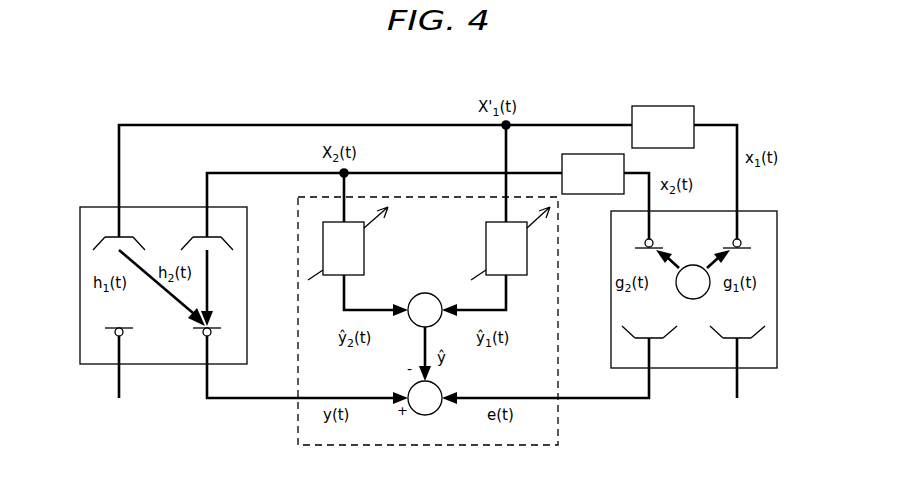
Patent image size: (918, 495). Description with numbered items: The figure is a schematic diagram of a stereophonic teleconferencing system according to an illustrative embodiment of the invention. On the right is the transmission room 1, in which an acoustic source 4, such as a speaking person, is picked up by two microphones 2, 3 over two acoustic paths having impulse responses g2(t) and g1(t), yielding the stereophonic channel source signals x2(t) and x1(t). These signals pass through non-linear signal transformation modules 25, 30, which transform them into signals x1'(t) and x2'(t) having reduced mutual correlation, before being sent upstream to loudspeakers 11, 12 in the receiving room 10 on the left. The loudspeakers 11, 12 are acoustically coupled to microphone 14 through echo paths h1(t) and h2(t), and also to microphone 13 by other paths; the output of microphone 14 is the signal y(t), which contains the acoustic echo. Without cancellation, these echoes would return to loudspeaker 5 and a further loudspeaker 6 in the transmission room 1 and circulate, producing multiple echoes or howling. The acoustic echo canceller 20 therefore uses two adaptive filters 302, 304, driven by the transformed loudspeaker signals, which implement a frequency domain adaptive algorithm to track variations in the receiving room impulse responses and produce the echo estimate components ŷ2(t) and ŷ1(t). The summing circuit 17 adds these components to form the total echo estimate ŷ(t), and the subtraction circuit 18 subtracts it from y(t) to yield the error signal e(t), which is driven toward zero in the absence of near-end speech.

The transmission room 1 is at (777, 262).
The microphone 2 is at (654, 242).
The microphone 3 is at (742, 242).
The acoustic source 4 is at (695, 265).
The loudspeaker 5 is at (645, 342).
The loudspeaker 6 is at (733, 342).
The receiving room 10 is at (247, 262).
The loudspeaker 11 is at (110, 233).
The loudspeaker 12 is at (198, 237).
The microphone 13 is at (114, 332).
The microphone 14 is at (203, 334).
The summing circuit 17 is at (412, 329).
The subtraction circuit 18 is at (442, 383).
The acoustic echo canceller 20 is at (298, 428).
The non-linear signal transformation module 25 is at (662, 106).
The non-linear signal transformation module 30 is at (584, 154).
The adaptive filter 302 is at (364, 248).
The adaptive filter 304 is at (486, 250).